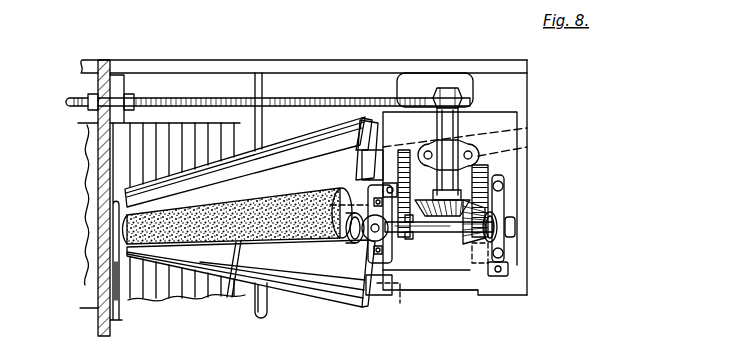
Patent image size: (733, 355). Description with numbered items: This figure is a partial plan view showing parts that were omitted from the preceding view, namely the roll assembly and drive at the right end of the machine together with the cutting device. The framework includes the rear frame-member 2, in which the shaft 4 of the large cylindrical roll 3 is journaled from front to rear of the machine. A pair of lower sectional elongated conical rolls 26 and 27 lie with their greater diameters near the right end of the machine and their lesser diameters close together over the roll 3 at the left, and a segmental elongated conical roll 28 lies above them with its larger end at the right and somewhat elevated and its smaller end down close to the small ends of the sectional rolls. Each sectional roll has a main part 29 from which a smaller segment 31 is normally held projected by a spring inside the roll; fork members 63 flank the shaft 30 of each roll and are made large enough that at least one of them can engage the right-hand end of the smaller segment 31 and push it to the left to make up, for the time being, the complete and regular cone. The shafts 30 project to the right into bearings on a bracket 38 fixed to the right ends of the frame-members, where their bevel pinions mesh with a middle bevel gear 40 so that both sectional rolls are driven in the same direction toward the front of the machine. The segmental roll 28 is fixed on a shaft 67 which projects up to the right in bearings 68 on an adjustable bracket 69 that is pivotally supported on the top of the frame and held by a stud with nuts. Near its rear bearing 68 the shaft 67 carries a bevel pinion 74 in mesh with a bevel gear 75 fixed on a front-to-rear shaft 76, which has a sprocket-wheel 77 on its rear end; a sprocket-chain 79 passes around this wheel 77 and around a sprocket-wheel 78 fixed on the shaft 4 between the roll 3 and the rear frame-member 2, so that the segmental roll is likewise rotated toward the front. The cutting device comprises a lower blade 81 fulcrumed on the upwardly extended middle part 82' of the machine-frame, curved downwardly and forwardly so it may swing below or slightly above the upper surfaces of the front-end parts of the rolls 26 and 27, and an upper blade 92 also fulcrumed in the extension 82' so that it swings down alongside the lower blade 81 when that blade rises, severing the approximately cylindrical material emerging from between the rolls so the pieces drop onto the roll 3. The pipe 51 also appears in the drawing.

The rear frame-member 2 is at (192, 70).
The large cylindrical roll 3 is at (170, 288).
The shaft of the roll 4 is at (114, 90).
The lower sectional elongated conical roll 26 is at (306, 290).
The lower sectional elongated conical roll 27 is at (303, 160).
The segmental elongated conical roll 28 is at (291, 190).
The main part of the roll 29 is at (350, 137).
The shaft 30 is at (385, 166).
The smaller segment 31 is at (232, 166).
The bracket 38 is at (515, 101).
The middle bevel gear 40 is at (482, 177).
The pipe 51 is at (262, 310).
The fork members 63 is at (378, 150).
The shaft 67 is at (438, 238).
The bearings 68 is at (372, 245).
The adjustable bracket 69 is at (470, 286).
The bevel pinion 74 is at (470, 250).
The bevel gear 75 is at (500, 195).
The front-to-rear shaft 76 is at (456, 90).
The sprocket-wheel 77 is at (470, 92).
The sprocket-wheel 78 is at (78, 108).
The sprocket-chain 79 is at (312, 100).
The lower blade 81 is at (95, 190).
The upwardly extended middle part of the machine-frame 82' is at (85, 221).
The upper blade 92 is at (118, 256).